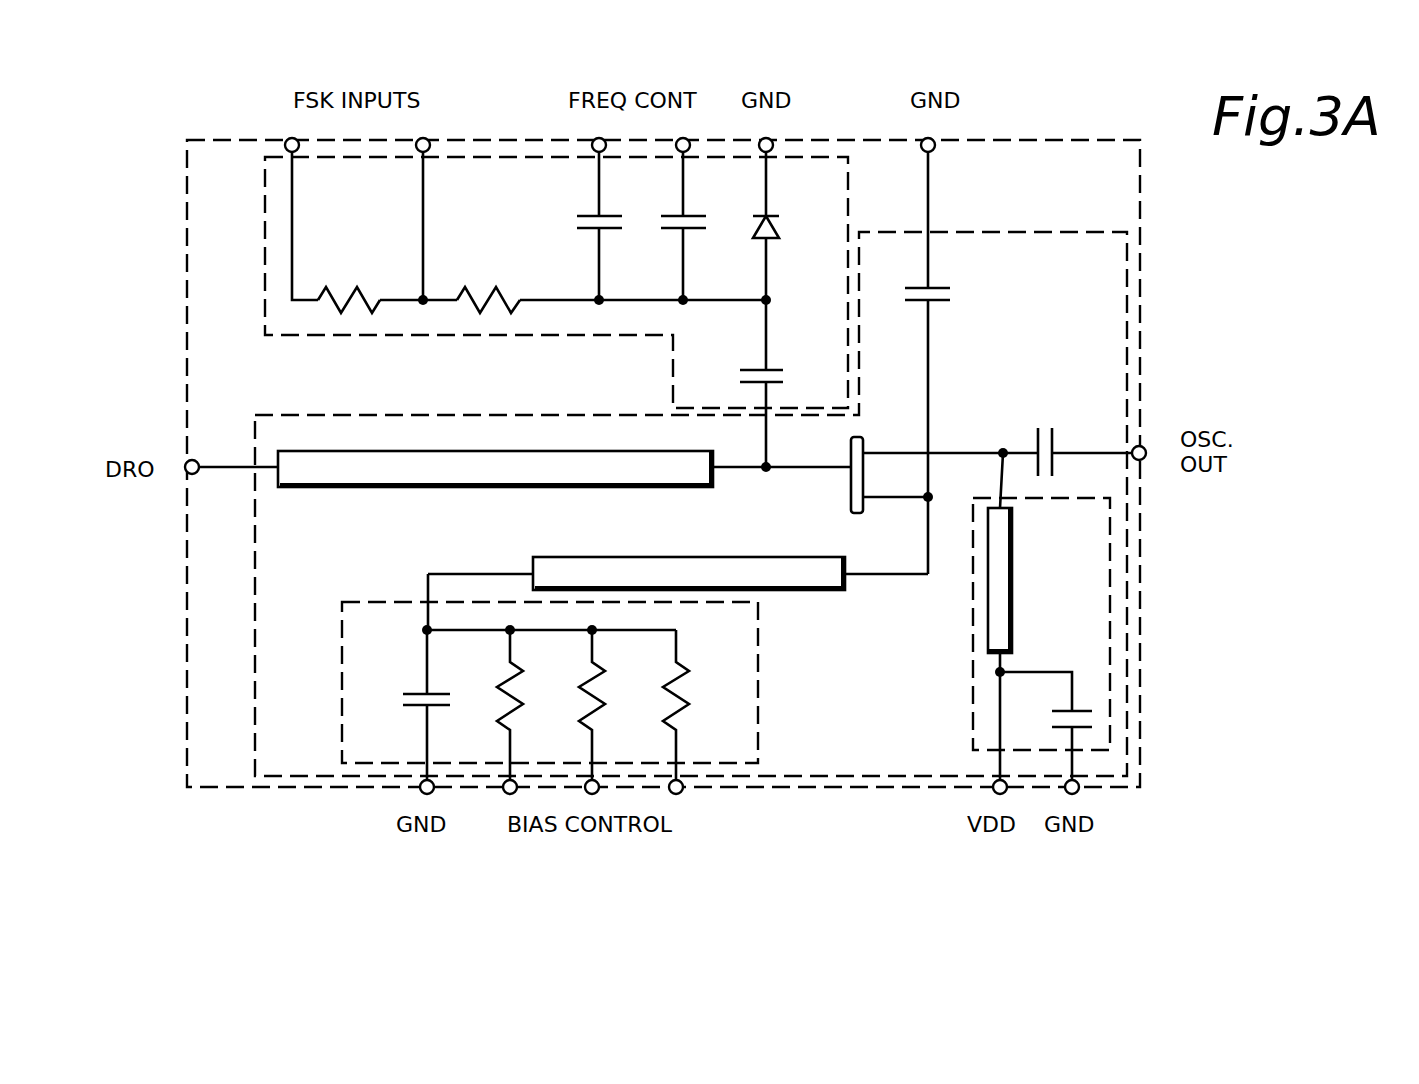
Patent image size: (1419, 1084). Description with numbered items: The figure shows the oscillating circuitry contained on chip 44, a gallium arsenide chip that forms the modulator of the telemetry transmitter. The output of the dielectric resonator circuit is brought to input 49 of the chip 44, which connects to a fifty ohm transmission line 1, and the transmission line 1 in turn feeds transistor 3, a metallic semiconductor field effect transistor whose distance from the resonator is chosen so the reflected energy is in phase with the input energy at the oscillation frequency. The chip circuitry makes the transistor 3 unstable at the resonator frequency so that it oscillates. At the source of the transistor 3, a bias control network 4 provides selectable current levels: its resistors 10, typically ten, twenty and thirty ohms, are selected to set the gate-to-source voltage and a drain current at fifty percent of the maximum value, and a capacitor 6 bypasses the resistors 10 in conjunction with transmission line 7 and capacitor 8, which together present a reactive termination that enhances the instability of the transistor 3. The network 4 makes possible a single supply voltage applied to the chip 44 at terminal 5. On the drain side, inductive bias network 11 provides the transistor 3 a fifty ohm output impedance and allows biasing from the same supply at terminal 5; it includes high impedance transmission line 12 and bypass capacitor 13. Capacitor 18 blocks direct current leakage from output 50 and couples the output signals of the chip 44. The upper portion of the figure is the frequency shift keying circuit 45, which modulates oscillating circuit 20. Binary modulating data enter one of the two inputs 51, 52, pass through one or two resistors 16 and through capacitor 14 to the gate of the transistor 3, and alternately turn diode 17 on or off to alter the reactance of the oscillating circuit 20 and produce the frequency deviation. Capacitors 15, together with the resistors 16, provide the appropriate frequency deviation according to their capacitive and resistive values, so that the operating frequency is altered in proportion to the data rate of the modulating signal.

The transmission line 1 is at (500, 455).
The transistor 3 is at (865, 437).
The bias control network 4 is at (765, 690).
The terminal 5 is at (994, 792).
The capacitor 6 is at (418, 690).
The transmission line 7 is at (688, 558).
The capacitor 8 is at (936, 290).
The resistors 10 is at (520, 692).
The inductive bias network 11 is at (970, 605).
The transmission line 12 is at (1012, 563).
The bypass capacitor 13 is at (1076, 710).
The capacitor 14 is at (782, 371).
The capacitors 15 is at (586, 215).
The resistors 16 is at (326, 292).
The diode 17 is at (780, 218).
The capacitor 18 is at (1036, 433).
The oscillating circuit 20 is at (995, 232).
The chip 44 is at (1015, 140).
The frequency shift keying circuit 45 is at (360, 337).
The input 49 is at (185, 472).
The output 50 is at (1145, 458).
The input 51 is at (286, 139).
The input 52 is at (429, 139).